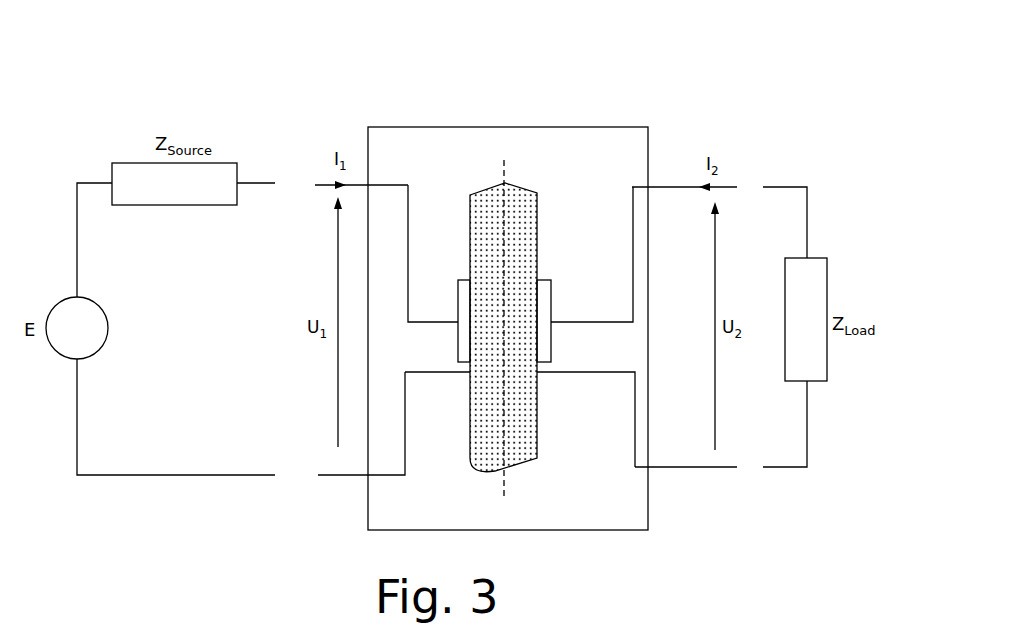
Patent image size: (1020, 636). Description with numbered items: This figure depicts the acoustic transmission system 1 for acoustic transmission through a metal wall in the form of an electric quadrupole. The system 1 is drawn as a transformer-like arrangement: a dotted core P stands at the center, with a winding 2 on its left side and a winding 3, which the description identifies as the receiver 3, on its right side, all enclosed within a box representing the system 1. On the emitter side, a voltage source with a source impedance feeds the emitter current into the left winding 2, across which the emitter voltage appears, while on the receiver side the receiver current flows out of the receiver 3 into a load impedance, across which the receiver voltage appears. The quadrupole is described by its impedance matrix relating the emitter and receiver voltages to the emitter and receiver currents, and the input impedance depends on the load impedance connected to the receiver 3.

The acoustic transmission system 1 is at (822, 127).
The primary winding 2 is at (465, 292).
The receiver 3 is at (545, 292).
The magnetic core P is at (512, 186).